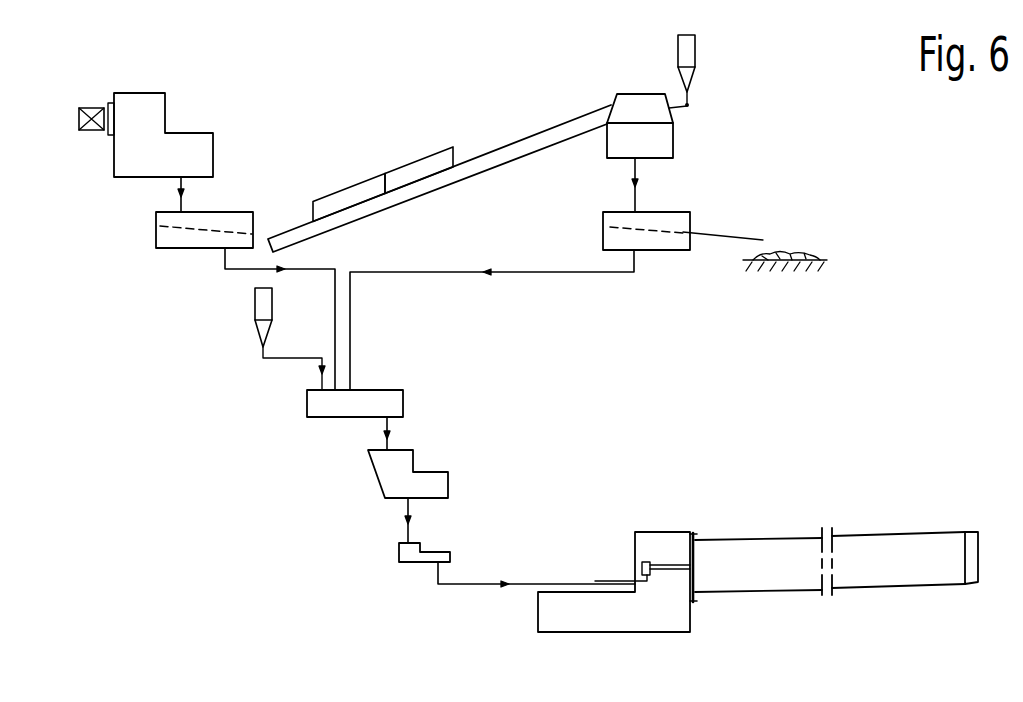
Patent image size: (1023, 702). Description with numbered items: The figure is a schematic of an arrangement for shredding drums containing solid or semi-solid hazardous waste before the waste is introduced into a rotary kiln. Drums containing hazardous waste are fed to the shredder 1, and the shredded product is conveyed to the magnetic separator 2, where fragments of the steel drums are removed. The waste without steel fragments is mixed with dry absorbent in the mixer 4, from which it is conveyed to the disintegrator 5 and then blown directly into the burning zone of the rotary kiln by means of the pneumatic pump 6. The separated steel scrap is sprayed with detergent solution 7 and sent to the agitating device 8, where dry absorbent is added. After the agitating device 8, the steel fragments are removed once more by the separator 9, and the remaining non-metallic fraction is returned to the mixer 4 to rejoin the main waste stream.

The shredder 1 is at (123, 150).
The magnetic separator 2 is at (165, 235).
The mixer 4 is at (320, 403).
The disintegrator 5 is at (395, 472).
The pneumatic pump 6 is at (400, 553).
The detergent solution 7 is at (403, 160).
The agitating device 8 is at (663, 145).
The separator 9 is at (677, 220).